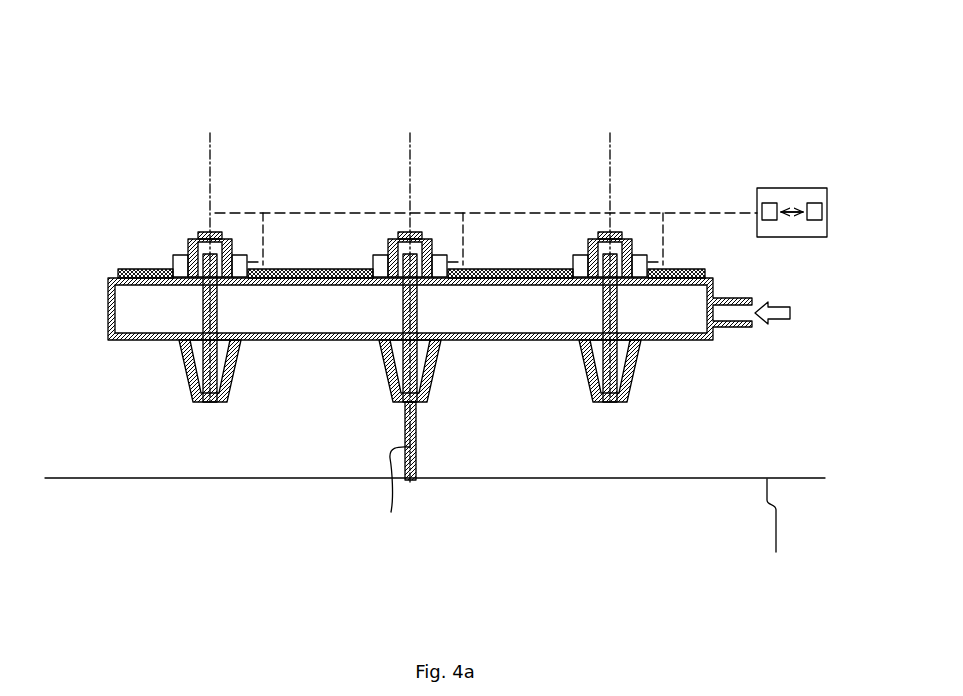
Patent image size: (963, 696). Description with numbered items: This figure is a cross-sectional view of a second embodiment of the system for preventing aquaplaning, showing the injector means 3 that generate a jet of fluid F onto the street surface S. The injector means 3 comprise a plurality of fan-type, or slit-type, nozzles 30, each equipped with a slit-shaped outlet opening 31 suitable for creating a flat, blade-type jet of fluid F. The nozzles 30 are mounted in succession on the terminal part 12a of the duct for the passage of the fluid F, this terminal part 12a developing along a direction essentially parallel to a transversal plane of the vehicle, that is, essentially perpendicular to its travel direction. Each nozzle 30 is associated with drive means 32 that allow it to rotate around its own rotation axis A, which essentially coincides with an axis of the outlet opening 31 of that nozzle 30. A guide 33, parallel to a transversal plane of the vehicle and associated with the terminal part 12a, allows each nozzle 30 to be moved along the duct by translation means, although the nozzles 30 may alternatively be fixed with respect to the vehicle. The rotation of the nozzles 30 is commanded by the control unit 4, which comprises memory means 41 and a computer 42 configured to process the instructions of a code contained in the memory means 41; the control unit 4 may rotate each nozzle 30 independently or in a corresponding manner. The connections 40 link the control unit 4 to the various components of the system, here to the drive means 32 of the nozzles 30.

The injector means 3 is at (97, 133).
The control unit 4 is at (781, 188).
The terminal part of the duct 12a is at (710, 342).
The fan-type nozzle 30 is at (235, 371).
The slit-shaped outlet opening 31 is at (209, 403).
The drive means 32 is at (174, 262).
The guide 33 is at (150, 268).
The connections 40 is at (510, 212).
The memory means 41 is at (765, 203).
The computer 42 is at (815, 203).